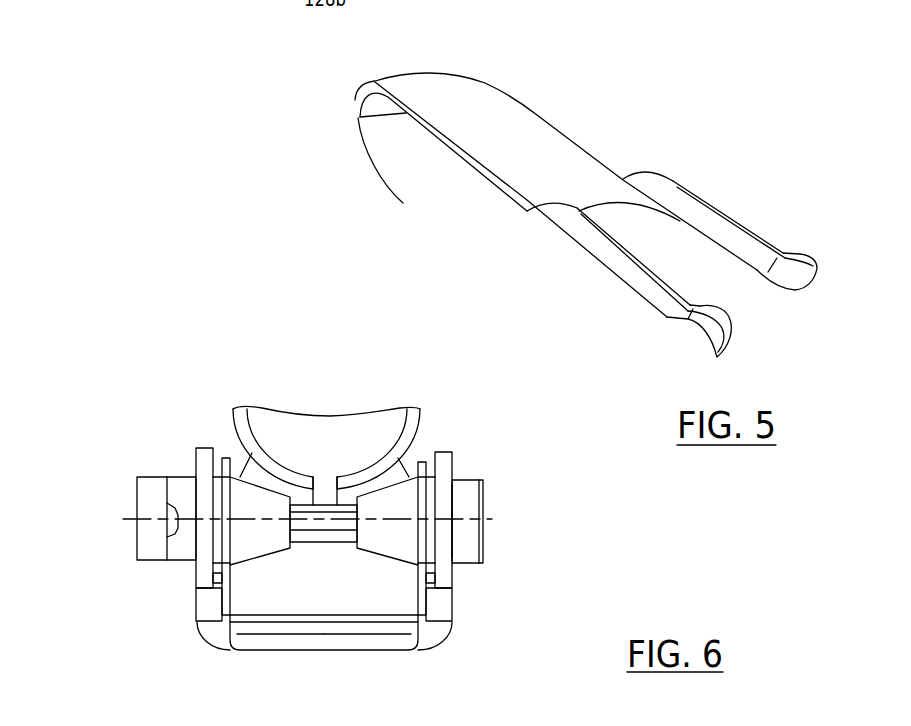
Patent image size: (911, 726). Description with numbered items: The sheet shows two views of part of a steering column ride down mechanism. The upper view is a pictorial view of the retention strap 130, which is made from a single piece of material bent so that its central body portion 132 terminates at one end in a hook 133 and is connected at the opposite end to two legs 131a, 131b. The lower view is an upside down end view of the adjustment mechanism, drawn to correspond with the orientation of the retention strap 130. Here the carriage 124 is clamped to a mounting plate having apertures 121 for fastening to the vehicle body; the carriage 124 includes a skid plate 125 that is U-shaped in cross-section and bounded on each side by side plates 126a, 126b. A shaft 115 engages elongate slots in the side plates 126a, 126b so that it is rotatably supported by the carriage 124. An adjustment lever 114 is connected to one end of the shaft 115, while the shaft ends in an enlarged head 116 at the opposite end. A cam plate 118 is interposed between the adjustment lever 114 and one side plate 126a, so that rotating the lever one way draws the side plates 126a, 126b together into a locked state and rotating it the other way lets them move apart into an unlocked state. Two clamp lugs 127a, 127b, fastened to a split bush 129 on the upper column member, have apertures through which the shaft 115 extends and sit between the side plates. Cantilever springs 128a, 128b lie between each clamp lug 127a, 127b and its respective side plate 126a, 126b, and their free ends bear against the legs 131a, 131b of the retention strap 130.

In FIG. 5, the retention strap 130 is at (546, 93).
In FIG. 5, the leg of retention strap 131a is at (563, 240).
In FIG. 6, the leg of retention strap 131a is at (197, 622).
In FIG. 5, the leg of retention strap 131b is at (753, 227).
In FIG. 6, the leg of retention strap 131b is at (450, 623).
In FIG. 5, the central body portion 132 is at (578, 144).
In FIG. 5, the hook 133 is at (403, 203).
In FIG. 6, the adjustment lever 114 is at (137, 503).
In FIG. 6, the shaft 115 is at (333, 503).
In FIG. 6, the enlarged head 116 is at (487, 485).
In FIG. 6, the cam plate 118 is at (173, 562).
In FIG. 6, the apertures 121 is at (485, 542).
In FIG. 6, the carriage 124 is at (452, 583).
In FIG. 6, the skid plate 125 is at (310, 633).
In FIG. 6, the side plate 126a is at (197, 450).
In FIG. 6, the side plate 126b is at (443, 452).
In FIG. 6, the clamp lug 127a is at (257, 553).
In FIG. 6, the clamp lug 127b is at (383, 555).
In FIG. 6, the cantilever spring 128a is at (228, 652).
In FIG. 6, the cantilever spring 128b is at (420, 623).
In FIG. 6, the split bush 129 is at (393, 422).